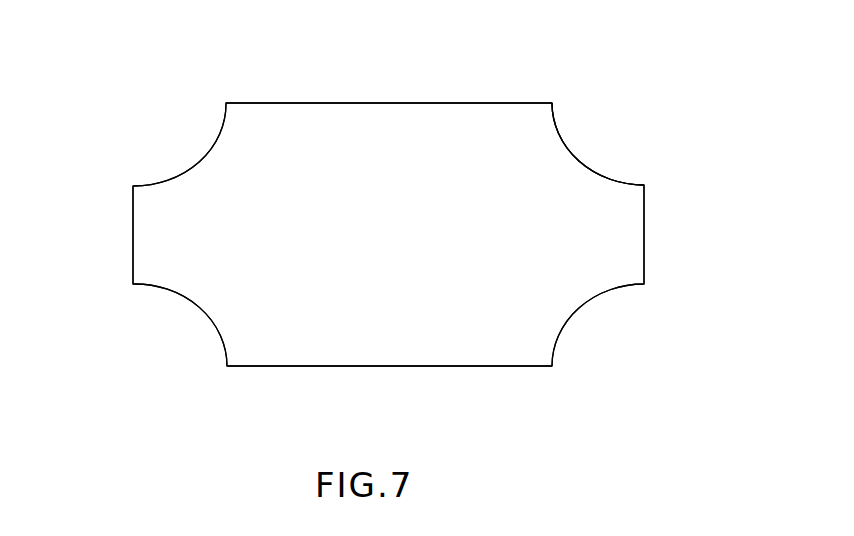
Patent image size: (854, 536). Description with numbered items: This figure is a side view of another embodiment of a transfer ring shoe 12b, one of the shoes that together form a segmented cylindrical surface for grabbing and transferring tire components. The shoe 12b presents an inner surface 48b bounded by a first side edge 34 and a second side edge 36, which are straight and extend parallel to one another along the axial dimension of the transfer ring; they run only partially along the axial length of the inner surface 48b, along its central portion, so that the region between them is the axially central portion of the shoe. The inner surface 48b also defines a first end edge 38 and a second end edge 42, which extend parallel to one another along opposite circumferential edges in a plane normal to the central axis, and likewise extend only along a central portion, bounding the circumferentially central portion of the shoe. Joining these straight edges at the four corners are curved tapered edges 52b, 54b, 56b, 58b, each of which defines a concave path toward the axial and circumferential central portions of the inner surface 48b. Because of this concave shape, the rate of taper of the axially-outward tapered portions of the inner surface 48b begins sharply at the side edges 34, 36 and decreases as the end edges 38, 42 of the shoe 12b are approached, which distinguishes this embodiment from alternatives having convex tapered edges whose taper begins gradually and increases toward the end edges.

The transfer ring shoe 12b is at (264, 130).
The first side edge 34 is at (371, 103).
The second side edge 36 is at (368, 366).
The first end edge 38 is at (133, 203).
The second end edge 42 is at (645, 248).
The inner surface 48b is at (499, 125).
The curved tapered edge 52b is at (604, 173).
The curved tapered edge 54b is at (580, 308).
The curved tapered edge 56b is at (207, 150).
The curved tapered edge 58b is at (190, 303).